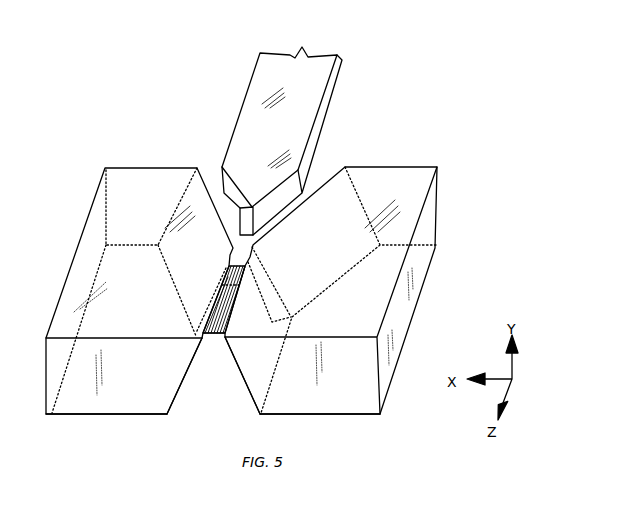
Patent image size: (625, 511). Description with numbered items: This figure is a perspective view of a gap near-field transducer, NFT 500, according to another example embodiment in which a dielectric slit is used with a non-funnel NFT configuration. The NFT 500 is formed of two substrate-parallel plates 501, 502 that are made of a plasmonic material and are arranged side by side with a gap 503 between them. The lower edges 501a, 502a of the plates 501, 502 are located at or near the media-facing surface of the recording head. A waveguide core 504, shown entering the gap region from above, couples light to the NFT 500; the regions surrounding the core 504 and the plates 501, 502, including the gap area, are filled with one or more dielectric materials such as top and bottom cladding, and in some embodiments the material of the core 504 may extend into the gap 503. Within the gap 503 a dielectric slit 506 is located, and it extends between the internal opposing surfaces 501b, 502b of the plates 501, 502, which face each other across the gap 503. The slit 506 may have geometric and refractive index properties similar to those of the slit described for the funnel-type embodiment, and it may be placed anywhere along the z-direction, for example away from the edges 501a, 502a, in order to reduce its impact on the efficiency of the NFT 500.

The NFT 500 is at (171, 117).
The substrate-parallel plate 501 is at (140, 168).
The edge of plate 501a is at (88, 414).
The internal opposing surface of plate 501b is at (175, 400).
The substrate-parallel plate 502 is at (376, 172).
The edge of plate 502a is at (343, 414).
The internal opposing surface of plate 502b is at (245, 400).
The gap 503 is at (217, 403).
The waveguide core 504 is at (276, 55).
The dielectric slit 506 is at (213, 337).